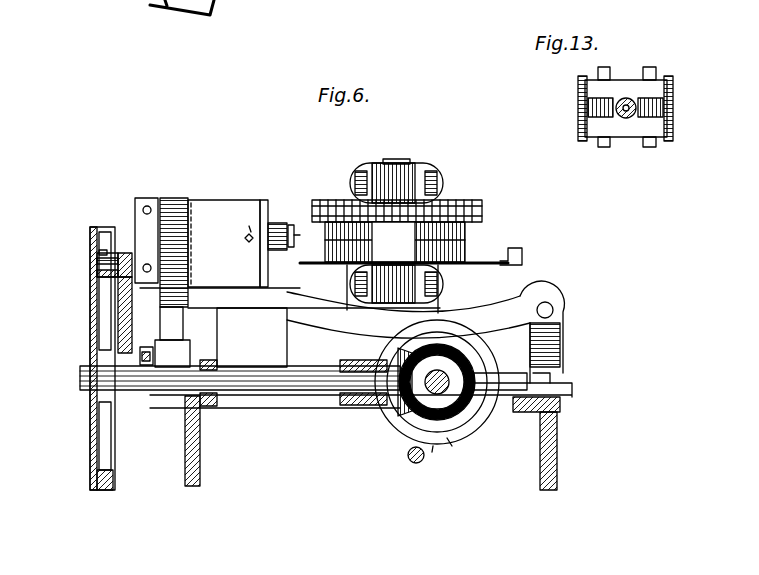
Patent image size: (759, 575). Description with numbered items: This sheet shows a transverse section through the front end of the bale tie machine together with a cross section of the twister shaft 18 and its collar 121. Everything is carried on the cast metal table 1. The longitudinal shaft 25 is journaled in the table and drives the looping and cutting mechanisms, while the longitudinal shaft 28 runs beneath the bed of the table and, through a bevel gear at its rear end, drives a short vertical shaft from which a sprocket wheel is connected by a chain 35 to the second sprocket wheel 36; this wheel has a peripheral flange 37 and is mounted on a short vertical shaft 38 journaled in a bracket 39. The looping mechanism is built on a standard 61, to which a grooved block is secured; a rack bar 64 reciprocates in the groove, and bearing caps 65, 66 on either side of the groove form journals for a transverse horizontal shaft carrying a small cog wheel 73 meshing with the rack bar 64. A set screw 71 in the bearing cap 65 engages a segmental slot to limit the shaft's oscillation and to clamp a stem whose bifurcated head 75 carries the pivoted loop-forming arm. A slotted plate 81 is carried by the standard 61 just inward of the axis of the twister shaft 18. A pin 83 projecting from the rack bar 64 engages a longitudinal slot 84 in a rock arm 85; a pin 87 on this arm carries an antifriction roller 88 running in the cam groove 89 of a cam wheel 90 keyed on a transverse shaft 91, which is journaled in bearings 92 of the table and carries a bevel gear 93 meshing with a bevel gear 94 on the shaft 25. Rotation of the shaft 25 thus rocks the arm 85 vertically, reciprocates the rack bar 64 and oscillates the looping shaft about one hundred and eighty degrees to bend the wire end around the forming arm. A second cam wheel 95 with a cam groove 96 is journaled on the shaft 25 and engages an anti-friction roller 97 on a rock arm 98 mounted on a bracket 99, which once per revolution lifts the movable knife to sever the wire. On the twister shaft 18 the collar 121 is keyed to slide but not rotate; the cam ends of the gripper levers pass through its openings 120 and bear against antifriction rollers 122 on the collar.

In FIG. 6, the table 1 is at (557, 441).
In FIG. 13, the twister shaft 18 is at (626, 120).
In FIG. 6, the longitudinal shaft 25 is at (455, 418).
In FIG. 6, the longitudinal shaft 28 is at (408, 475).
In FIG. 6, the chain 35 is at (478, 205).
In FIG. 6, the second sprocket wheel 36 is at (484, 219).
In FIG. 6, the peripheral flange 37 is at (480, 262).
In FIG. 6, the short vertical shaft 38 is at (405, 163).
In FIG. 6, the bracket 39 is at (440, 298).
In FIG. 6, the standard 61 is at (233, 318).
In FIG. 6, the rack bar 64 is at (178, 200).
In FIG. 6, the bearing cap 65 is at (246, 241).
In FIG. 6, the bearing cap 66 is at (160, 200).
In FIG. 6, the set screw 71 is at (250, 226).
In FIG. 6, the cog wheel 73 is at (185, 236).
In FIG. 6, the head 75 is at (278, 222).
In FIG. 6, the plate 81 is at (296, 224).
In FIG. 6, the pin 83 is at (150, 366).
In FIG. 6, the longitudinal slot 84 is at (145, 366).
In FIG. 6, the rock arm 85 is at (125, 321).
In FIG. 6, the pin 87 is at (130, 258).
In FIG. 6, the antifriction roller 88 is at (103, 268).
In FIG. 6, the cam groove 89 is at (100, 254).
In FIG. 6, the cam wheel 90 is at (93, 432).
In FIG. 6, the transverse shaft 91 is at (82, 376).
In FIG. 6, the bearings 92 is at (216, 366).
In FIG. 6, the bevel gear 93 is at (402, 412).
In FIG. 6, the bevel gear 94 is at (472, 408).
In FIG. 6, the cam wheel 95 is at (432, 448).
In FIG. 6, the cam groove 96 is at (447, 438).
In FIG. 6, the anti-friction roller 97 is at (440, 328).
In FIG. 6, the rock arm 98 is at (544, 302).
In FIG. 6, the bracket 99 is at (562, 340).
In FIG. 13, the openings 120 is at (590, 115).
In FIG. 13, the collar 121 is at (636, 85).
In FIG. 13, the antifriction rollers 122 is at (586, 108).